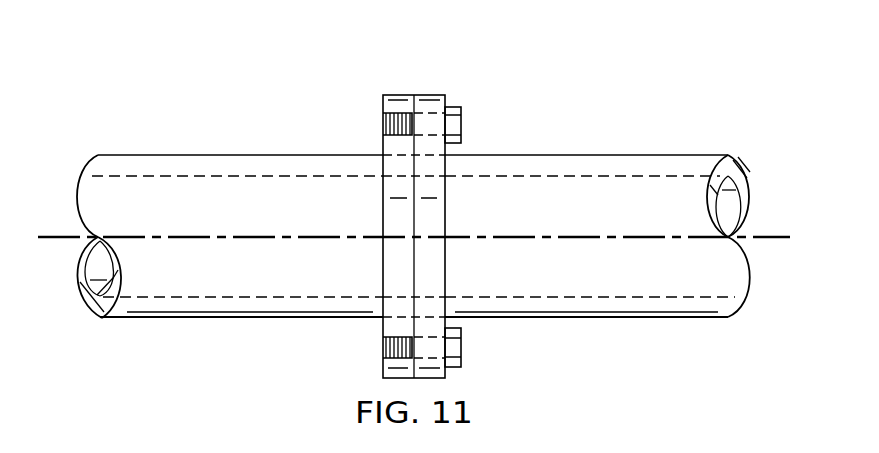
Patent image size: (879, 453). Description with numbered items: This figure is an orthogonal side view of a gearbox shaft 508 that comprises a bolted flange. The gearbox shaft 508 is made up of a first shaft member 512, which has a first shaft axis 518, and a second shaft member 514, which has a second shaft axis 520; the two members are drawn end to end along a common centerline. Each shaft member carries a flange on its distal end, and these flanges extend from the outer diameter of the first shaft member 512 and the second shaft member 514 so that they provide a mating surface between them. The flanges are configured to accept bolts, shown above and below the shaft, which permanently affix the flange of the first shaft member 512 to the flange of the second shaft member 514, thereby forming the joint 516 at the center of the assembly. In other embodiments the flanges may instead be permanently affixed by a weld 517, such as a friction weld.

The gearbox shaft 508 is at (300, 106).
The first shaft member 512 is at (152, 155).
The second shaft member 514 is at (678, 155).
The joint 516 is at (415, 268).
The weld 517 is at (415, 93).
The first shaft axis 518 is at (60, 233).
The second shaft axis 520 is at (768, 233).